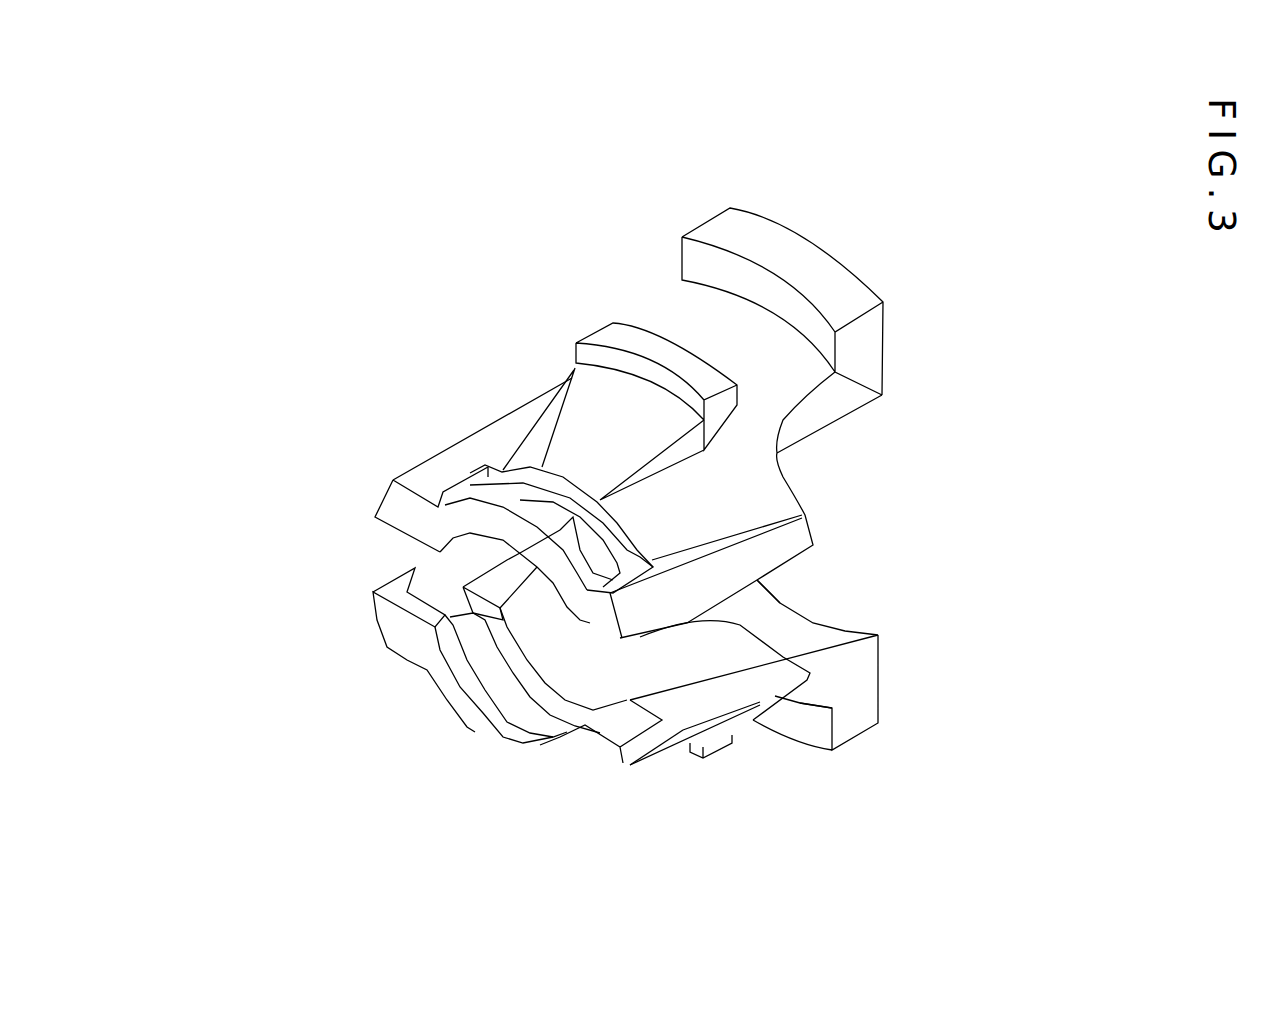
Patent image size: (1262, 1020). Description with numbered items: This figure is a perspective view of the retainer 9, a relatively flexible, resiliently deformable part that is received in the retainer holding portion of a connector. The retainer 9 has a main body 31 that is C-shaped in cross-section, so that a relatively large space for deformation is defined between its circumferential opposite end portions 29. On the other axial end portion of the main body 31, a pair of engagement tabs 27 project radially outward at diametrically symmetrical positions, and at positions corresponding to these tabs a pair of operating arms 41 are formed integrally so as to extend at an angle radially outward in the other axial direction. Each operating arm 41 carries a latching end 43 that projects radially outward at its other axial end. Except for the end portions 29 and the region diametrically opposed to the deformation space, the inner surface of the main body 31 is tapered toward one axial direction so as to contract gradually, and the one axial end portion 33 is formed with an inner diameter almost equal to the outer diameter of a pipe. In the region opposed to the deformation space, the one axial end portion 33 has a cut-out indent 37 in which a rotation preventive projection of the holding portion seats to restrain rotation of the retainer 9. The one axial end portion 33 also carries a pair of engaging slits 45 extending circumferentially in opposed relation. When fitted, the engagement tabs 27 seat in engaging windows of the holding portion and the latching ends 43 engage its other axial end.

The retainer 9 is at (268, 281).
The engagement tabs 27 is at (680, 367).
The circumferential opposite end portions 29 is at (776, 642).
The main body 31 is at (695, 508).
The one axial end portion 33 is at (520, 730).
The cut-out indent 37 is at (412, 569).
The operating arms 41 is at (790, 430).
The latching end 43 is at (823, 275).
The engaging slits 45 is at (500, 470).